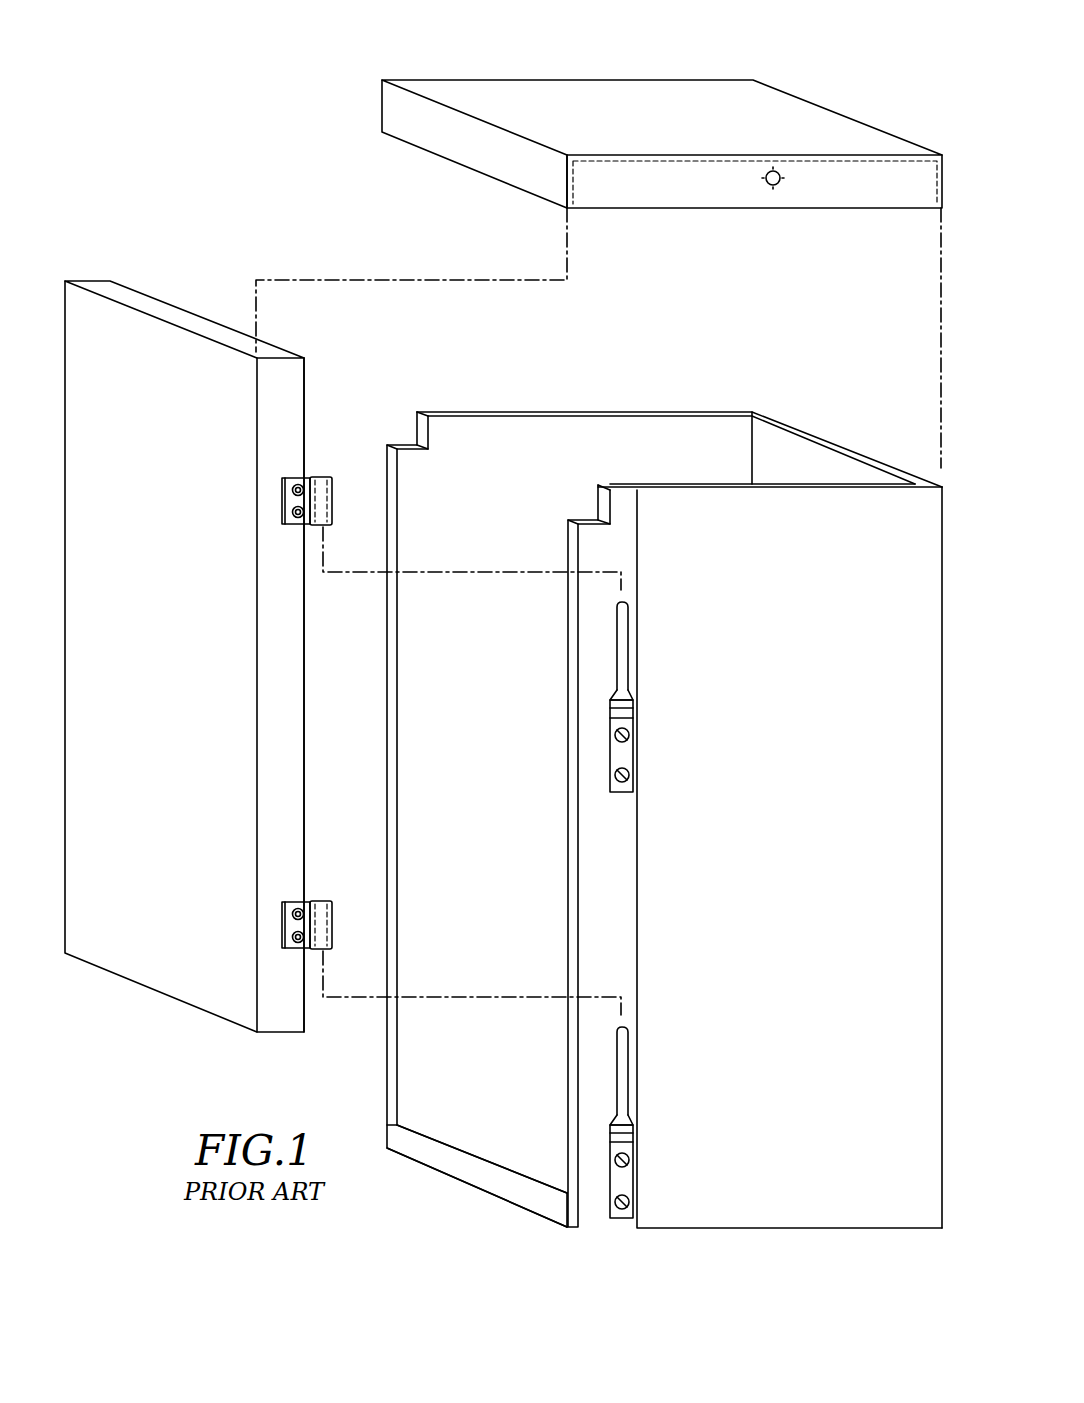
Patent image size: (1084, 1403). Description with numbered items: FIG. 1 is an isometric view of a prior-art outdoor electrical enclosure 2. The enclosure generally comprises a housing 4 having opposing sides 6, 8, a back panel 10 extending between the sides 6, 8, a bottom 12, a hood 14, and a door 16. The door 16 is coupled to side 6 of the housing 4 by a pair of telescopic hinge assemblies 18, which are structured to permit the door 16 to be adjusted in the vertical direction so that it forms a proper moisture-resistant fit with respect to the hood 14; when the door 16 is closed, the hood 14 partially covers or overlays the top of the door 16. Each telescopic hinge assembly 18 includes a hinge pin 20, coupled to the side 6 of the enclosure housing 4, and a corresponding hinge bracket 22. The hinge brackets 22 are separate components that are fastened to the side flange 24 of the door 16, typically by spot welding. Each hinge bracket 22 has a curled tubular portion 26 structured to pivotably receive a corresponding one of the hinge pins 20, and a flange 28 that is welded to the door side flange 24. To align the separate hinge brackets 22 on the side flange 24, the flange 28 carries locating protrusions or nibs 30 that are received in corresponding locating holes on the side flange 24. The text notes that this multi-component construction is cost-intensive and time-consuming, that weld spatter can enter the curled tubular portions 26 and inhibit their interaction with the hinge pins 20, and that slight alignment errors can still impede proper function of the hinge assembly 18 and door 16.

The outdoor electrical enclosure 2 is at (679, 847).
The housing 4 is at (855, 1208).
The side 6 is at (789, 859).
The side 8 is at (477, 819).
The back panel 10 is at (827, 440).
The bottom 12 is at (437, 1170).
The hood 14 is at (588, 100).
The door 16 is at (163, 972).
The telescopic hinge assembly 18 is at (652, 597).
The hinge pin 20 is at (625, 647).
The hinge bracket 22 is at (290, 498).
The side flange 24 is at (295, 665).
The curled tubular portion 26 is at (332, 490).
The flange 28 is at (293, 525).
The locating nib 30 is at (303, 507).